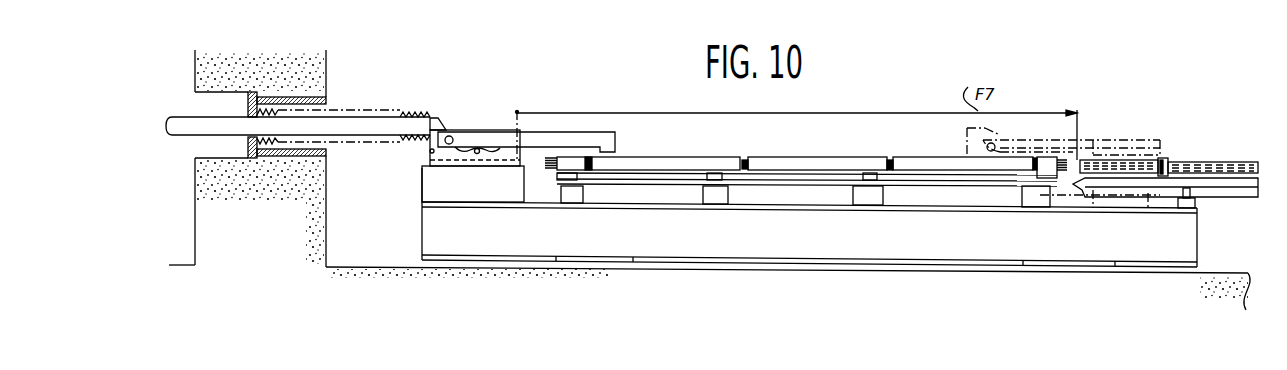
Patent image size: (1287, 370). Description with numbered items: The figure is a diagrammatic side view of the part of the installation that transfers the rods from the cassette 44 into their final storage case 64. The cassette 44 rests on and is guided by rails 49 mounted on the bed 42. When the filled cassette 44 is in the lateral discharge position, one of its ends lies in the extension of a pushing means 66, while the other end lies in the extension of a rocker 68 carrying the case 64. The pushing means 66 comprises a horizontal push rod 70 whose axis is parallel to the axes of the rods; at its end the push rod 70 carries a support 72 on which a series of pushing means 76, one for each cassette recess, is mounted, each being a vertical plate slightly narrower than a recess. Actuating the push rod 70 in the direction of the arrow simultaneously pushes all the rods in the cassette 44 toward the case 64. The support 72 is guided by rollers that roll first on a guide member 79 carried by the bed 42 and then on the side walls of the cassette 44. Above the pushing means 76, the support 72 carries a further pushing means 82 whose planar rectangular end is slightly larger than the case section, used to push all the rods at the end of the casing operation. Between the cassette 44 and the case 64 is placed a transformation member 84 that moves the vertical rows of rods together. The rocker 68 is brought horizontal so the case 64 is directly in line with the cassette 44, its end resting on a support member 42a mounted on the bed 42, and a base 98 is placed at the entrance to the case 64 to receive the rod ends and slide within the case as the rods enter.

The bed 42 is at (645, 249).
The support member 42a is at (1197, 203).
The cassette 44 is at (773, 157).
The rails 49 is at (572, 180).
The case 64 is at (1248, 153).
The pushing means 66 is at (498, 80).
The rocker 68 is at (1232, 192).
The push rod 70 is at (383, 125).
The support 72 is at (433, 118).
The pushing means 76 is at (497, 156).
The guide member 79 is at (422, 181).
The pushing means 82 is at (590, 133).
The transformation member 84 is at (1118, 140).
The base 98 is at (1163, 160).